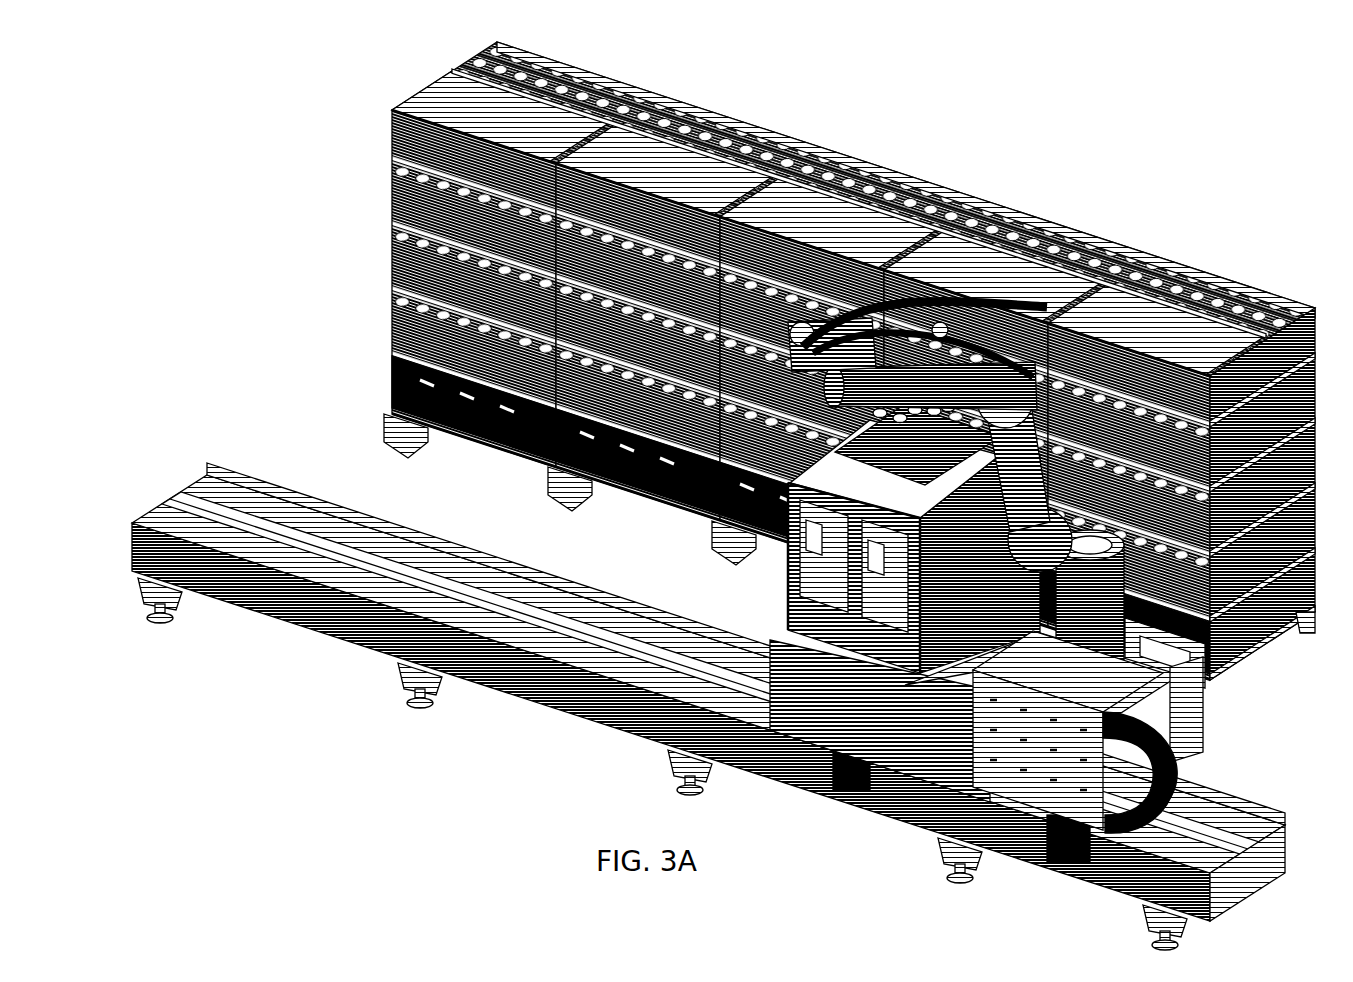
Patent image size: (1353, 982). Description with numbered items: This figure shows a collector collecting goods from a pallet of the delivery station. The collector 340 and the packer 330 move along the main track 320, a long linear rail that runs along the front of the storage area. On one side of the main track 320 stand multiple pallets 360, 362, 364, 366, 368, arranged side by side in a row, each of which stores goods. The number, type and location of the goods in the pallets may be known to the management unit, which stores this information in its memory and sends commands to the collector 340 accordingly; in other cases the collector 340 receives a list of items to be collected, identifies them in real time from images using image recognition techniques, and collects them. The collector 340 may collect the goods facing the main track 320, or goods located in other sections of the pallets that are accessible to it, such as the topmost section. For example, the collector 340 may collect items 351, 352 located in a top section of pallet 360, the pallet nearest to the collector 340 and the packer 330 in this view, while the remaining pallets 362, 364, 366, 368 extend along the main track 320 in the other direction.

The main track 320 is at (236, 466).
The packer 330 is at (788, 611).
The collector 340 is at (1198, 732).
The item 351 is at (1200, 277).
The item 352 is at (1256, 289).
The pallet 360 is at (1172, 256).
The pallet 362 is at (1040, 214).
The pallet 364 is at (883, 162).
The pallet 366 is at (735, 116).
The pallet 368 is at (613, 68).